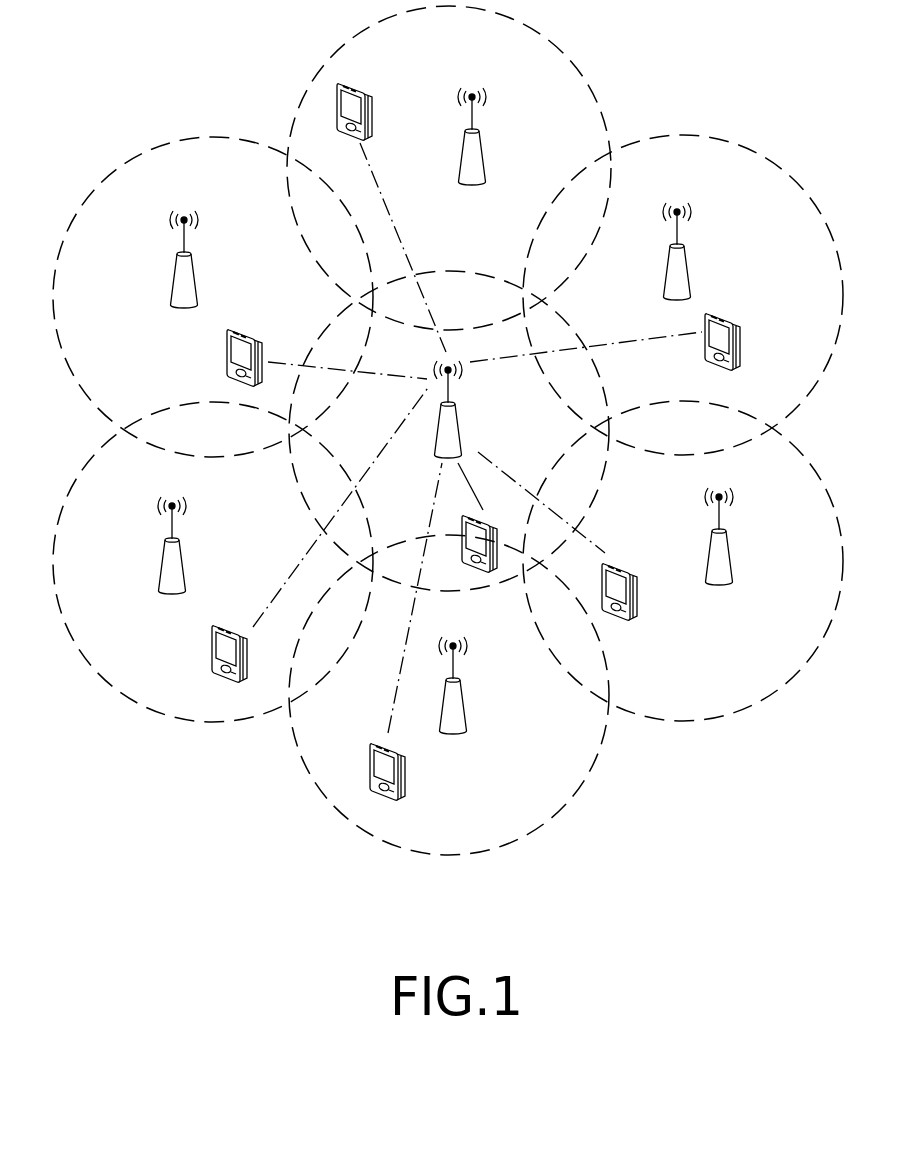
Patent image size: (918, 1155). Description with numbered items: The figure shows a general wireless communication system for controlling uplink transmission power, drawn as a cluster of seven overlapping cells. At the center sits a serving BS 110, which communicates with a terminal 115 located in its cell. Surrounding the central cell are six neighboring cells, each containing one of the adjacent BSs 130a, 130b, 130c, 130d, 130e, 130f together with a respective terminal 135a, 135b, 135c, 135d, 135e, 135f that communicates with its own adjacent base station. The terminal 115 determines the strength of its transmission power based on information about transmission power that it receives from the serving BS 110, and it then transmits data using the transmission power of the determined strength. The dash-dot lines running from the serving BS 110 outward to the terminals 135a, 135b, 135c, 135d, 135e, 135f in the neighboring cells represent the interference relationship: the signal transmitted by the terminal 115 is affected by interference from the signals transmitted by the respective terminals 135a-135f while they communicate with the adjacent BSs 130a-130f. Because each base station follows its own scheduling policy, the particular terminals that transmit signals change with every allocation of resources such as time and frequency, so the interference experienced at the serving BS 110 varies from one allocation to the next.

The serving BS 110 is at (462, 428).
The terminal 115 is at (489, 574).
The adjacent BS 130a is at (732, 554).
The adjacent BS 130b is at (466, 702).
The adjacent BS 130c is at (185, 563).
The adjacent BS 130d is at (197, 275).
The adjacent BS 130e is at (484, 153).
The adjacent BS 130f is at (690, 267).
The terminal 135a is at (639, 593).
The terminal 135b is at (407, 773).
The terminal 135c is at (208, 646).
The terminal 135d is at (222, 348).
The terminal 135e is at (372, 113).
The terminal 135f is at (742, 345).